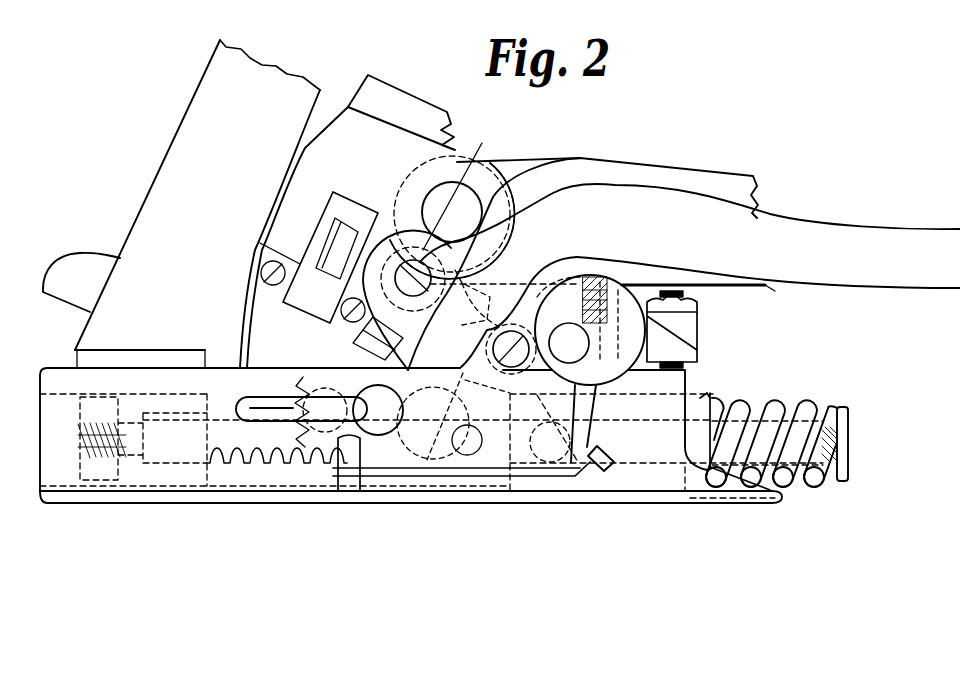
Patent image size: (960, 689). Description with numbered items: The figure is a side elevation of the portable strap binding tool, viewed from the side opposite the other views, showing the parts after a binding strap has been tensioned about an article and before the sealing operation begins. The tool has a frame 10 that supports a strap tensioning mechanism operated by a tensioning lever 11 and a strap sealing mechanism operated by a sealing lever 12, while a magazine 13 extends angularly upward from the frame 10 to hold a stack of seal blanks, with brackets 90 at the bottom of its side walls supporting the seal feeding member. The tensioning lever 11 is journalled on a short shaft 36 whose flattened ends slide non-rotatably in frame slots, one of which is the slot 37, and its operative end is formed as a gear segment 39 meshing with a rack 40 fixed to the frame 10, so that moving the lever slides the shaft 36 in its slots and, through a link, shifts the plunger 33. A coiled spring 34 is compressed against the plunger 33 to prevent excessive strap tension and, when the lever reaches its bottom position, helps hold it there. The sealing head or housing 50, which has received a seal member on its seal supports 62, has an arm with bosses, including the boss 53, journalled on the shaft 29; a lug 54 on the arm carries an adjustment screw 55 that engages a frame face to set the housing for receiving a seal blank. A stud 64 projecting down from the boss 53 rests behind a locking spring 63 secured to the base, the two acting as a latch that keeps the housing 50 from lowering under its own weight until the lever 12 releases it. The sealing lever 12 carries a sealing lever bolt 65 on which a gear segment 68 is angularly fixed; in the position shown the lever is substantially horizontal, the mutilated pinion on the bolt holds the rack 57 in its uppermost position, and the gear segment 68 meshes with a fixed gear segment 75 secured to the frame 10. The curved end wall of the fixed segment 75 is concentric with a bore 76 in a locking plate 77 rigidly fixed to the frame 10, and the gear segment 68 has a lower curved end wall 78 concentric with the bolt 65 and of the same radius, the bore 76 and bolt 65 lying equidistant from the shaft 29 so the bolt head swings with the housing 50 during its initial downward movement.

The frame 10 is at (205, 492).
The tensioning lever 11 is at (890, 236).
The sealing lever 12 is at (693, 178).
The magazine 13 is at (178, 134).
The shaft 29 is at (569, 343).
The plunger 33 is at (704, 400).
The coiled spring 34 is at (775, 405).
The short shaft 36 is at (338, 398).
The slot 37 is at (256, 397).
The gear segment 39 is at (301, 377).
The rack 40 is at (268, 463).
The sealing head or housing 50 is at (331, 253).
The boss 53 is at (640, 331).
The lug 54 is at (693, 320).
The adjustment screw 55 is at (690, 363).
The rack 57 is at (420, 100).
The seal supports 62 is at (256, 313).
The locking spring 63 is at (550, 470).
The stud 64 is at (598, 410).
The sealing lever bolt 65 is at (461, 187).
The gear segment 68 is at (522, 207).
The fixed gear segment 75 is at (582, 262).
The bore 76 is at (418, 326).
The locking plate 77 is at (414, 250).
The lower curved end wall 78 is at (477, 298).
The brackets 90 is at (90, 262).